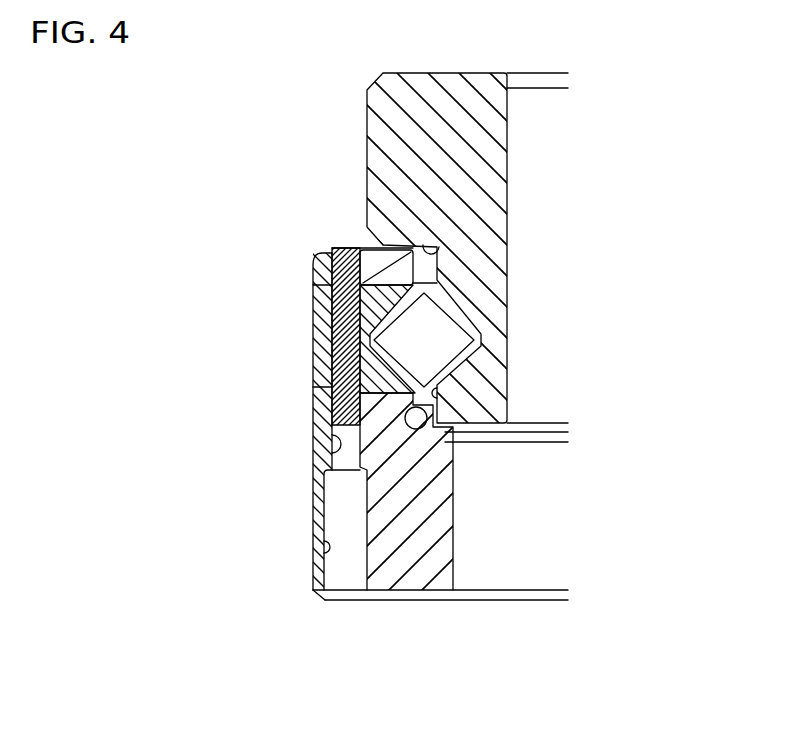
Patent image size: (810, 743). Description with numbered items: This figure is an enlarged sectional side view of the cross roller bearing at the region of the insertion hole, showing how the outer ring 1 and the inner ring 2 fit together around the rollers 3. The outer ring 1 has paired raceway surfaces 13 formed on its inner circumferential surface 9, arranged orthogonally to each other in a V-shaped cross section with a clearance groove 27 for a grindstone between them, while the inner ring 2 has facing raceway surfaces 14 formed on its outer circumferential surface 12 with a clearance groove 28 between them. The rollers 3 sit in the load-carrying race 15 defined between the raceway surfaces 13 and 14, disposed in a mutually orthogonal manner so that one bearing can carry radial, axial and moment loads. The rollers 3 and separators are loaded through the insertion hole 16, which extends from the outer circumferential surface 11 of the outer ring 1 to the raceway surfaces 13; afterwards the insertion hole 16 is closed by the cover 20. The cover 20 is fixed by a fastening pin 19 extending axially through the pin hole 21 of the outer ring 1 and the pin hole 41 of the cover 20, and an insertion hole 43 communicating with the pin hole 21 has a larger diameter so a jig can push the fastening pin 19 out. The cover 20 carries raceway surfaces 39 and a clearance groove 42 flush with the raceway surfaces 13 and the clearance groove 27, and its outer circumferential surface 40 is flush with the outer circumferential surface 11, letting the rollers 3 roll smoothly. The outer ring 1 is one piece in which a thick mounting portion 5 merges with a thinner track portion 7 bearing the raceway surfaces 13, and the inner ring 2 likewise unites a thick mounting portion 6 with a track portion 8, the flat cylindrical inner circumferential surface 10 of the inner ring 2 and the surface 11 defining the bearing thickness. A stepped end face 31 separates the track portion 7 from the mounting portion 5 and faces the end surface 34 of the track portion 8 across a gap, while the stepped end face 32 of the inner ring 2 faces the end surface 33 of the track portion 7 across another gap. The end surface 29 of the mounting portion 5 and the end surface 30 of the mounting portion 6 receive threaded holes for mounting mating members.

The outer ring 1 is at (397, 557).
The inner ring 2 is at (400, 125).
The rollers 3 is at (437, 327).
The mounting portion 5 is at (422, 522).
The mounting portion 6 is at (470, 107).
The track portion 7 is at (355, 248).
The track portion 8 is at (477, 297).
The inner circumferential surface 9 is at (438, 265).
The inner circumferential surface 10 is at (508, 135).
The outer circumferential surface 11 is at (313, 538).
The outer circumferential surface 12 is at (367, 147).
The raceway surfaces 13 is at (335, 408).
The raceway surfaces 14 is at (422, 355).
The load-carrying race 15 is at (440, 378).
The insertion hole 16 is at (313, 293).
The fastening pin 19 is at (335, 415).
The cover 20 is at (313, 320).
The pin hole 21 is at (333, 440).
The clearance groove 27 is at (325, 373).
The clearance groove 28 is at (481, 341).
The end surface 29 is at (412, 602).
The end surface 30 is at (422, 73).
The stepped end face 31 is at (440, 445).
The stepped end face 32 is at (443, 268).
The end surface 33 is at (372, 242).
The end surface 34 is at (462, 425).
The raceway surfaces 39 is at (233, 436).
The outer circumferential surface 40 is at (317, 362).
The pin hole 41 is at (317, 342).
The clearance groove 42 is at (236, 396).
The insertion hole 43 is at (313, 573).